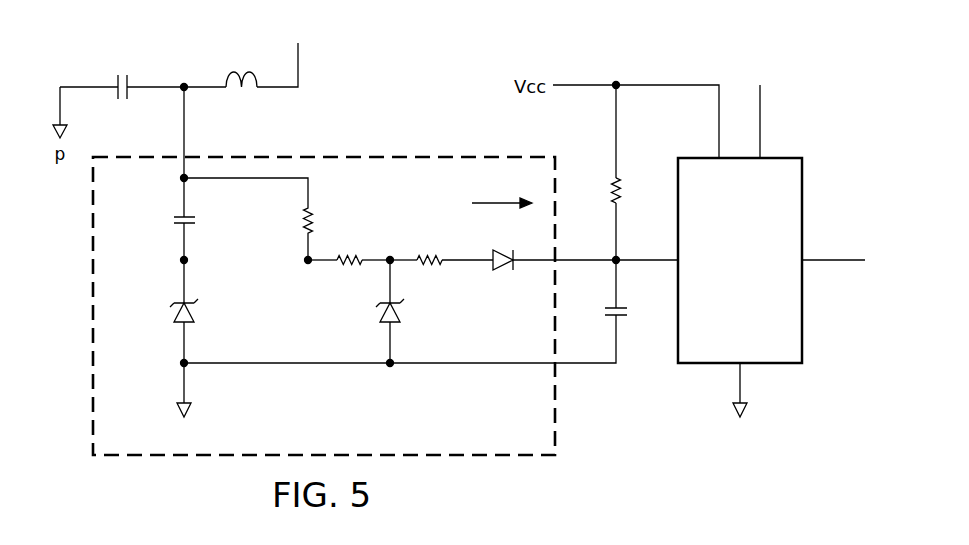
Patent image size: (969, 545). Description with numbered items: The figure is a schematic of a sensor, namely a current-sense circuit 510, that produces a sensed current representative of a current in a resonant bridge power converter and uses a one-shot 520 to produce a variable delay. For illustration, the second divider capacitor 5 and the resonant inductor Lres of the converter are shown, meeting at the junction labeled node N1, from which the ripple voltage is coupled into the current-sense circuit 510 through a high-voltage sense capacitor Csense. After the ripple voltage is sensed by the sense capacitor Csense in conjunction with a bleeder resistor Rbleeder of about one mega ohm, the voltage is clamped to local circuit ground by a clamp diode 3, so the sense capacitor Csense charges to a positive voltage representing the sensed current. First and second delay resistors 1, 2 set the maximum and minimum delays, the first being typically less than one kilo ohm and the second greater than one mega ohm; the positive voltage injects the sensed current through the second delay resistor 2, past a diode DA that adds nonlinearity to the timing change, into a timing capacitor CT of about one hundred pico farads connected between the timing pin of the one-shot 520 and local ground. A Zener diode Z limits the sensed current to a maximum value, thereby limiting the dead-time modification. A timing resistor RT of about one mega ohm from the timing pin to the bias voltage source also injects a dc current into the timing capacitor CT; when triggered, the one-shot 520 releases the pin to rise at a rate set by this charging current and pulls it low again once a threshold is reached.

The current-sense circuit 510 is at (274, 158).
The one-shot 520 is at (803, 240).
The second divider capacitor 5 is at (121, 71).
The node N1 is at (186, 71).
The resonant inductor Lres is at (240, 64).
The high-voltage sense capacitor Csense is at (149, 219).
The bleeder resistor Rbleeder is at (248, 219).
The clamp diode 3 is at (169, 311).
The first delay resistor 1 is at (349, 242).
The second delay resistor 2 is at (430, 242).
The diode DA is at (503, 243).
The Zener diode Z is at (379, 311).
The timing resistor RT is at (633, 190).
The timing capacitor CT is at (631, 313).